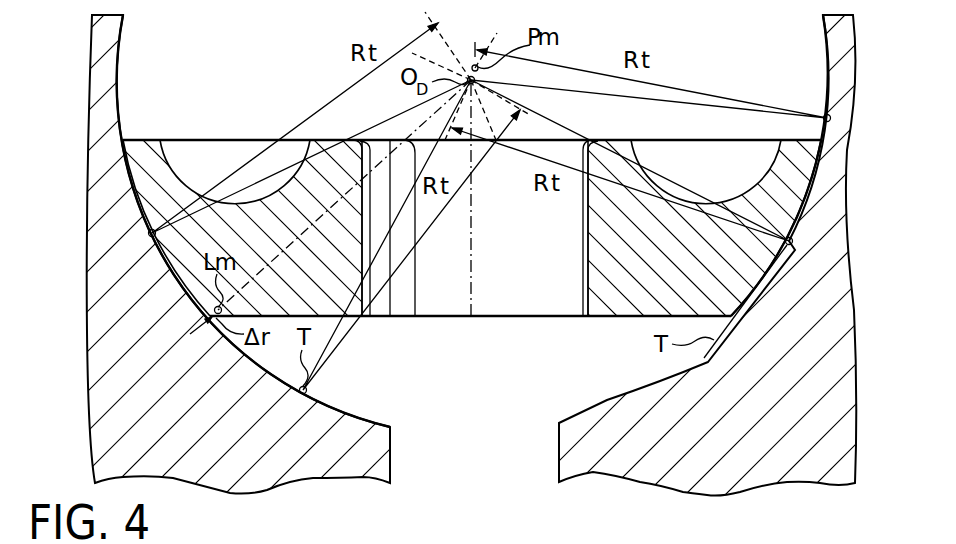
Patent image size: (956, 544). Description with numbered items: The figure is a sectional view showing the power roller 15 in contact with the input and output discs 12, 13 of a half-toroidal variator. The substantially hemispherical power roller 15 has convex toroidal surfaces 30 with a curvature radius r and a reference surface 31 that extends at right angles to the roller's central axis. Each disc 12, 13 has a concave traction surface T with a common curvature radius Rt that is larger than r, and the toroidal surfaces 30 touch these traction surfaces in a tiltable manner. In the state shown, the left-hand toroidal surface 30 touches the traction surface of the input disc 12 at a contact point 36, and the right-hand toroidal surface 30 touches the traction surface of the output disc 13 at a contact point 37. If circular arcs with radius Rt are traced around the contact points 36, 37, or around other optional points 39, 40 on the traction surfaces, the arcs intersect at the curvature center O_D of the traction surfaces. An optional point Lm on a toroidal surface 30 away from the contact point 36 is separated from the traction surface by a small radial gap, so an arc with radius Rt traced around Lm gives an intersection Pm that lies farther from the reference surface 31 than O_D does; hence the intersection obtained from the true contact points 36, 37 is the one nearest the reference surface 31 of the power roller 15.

The input disc 12 is at (112, 30).
The output disc 13 is at (825, 30).
The toroidal surface 30 is at (132, 223).
The reference surface 31 is at (330, 140).
The power roller 15 is at (598, 313).
The contact point 36 is at (152, 237).
The contact point 37 is at (790, 245).
The optional point 39 is at (307, 390).
The optional point 40 is at (825, 116).